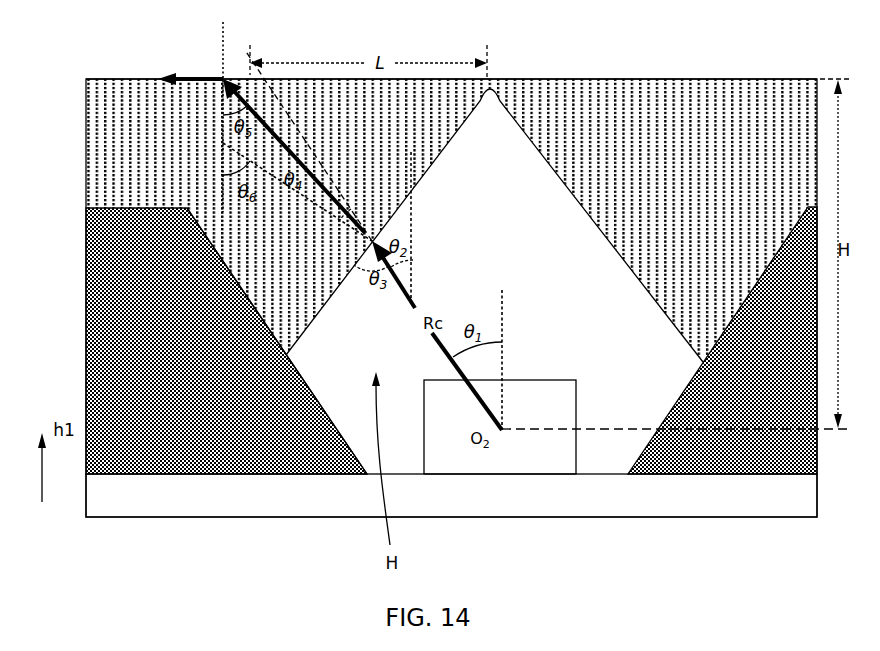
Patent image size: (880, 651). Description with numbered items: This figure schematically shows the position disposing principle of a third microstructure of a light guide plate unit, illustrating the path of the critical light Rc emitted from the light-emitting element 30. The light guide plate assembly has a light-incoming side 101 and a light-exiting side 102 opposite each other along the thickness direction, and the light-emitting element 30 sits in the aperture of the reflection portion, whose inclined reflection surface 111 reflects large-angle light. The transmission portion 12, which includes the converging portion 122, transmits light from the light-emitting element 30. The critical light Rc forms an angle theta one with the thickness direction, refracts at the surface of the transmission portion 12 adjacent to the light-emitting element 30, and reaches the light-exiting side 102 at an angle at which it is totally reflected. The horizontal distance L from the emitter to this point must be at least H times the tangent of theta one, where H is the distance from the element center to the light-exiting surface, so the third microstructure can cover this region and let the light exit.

The transmission portion 12 is at (568, 127).
The light-exiting side 102 is at (135, 62).
The converging portion 122 is at (650, 240).
The reflection surface 111 is at (293, 368).
The light-incoming side 101 is at (733, 524).
The light-emitting element 30 is at (530, 450).